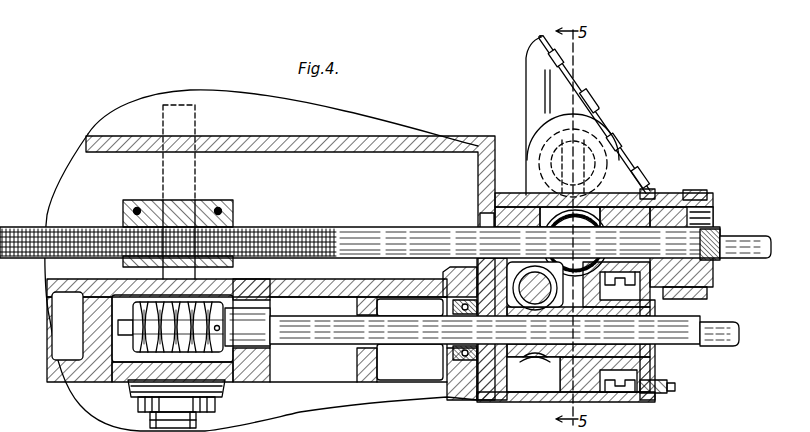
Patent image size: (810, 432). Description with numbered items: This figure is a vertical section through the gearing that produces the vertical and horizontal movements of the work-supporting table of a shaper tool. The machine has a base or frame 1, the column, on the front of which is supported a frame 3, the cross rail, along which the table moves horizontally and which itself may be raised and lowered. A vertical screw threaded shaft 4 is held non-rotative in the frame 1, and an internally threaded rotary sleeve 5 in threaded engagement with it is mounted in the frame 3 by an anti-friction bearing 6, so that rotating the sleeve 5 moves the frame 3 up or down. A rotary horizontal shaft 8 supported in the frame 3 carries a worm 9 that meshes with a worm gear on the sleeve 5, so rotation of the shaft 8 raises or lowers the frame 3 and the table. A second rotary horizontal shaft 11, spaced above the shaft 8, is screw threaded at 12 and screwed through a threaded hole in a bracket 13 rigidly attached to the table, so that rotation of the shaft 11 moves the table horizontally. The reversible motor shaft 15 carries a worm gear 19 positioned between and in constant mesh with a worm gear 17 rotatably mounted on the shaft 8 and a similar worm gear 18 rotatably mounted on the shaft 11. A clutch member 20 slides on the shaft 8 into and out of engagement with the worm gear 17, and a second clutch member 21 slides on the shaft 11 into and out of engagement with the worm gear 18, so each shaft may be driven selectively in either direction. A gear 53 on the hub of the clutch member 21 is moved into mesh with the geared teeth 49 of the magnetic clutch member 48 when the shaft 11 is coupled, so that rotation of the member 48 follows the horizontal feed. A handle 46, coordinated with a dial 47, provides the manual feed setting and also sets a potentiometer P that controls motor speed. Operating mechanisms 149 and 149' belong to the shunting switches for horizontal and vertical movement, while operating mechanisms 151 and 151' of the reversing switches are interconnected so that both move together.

The base or frame 1 is at (80, 190).
The frame 3 is at (50, 284).
The screw threaded shaft 4 is at (183, 105).
The internally threaded rotary sleeve 5 is at (207, 360).
The anti-friction bearing 6 is at (136, 398).
The rotary horizontal shaft 8 is at (323, 337).
The worm 9 is at (130, 346).
The rotary horizontal shaft 11 is at (414, 228).
The screw thread 12 is at (304, 228).
The bracket 13 is at (233, 214).
The motor shaft 15 is at (538, 357).
The worm gear 17 is at (546, 394).
The worm gear 18 is at (548, 192).
The worm gear 19 is at (557, 297).
The clutch member 20 is at (597, 394).
The second clutch member 21 is at (686, 201).
The finger piece or handle 46 is at (598, 126).
The dial 47 is at (542, 128).
The member 48 is at (594, 142).
The geared teeth 49 is at (545, 182).
The gear 53 is at (623, 147).
The operating mechanism 149 is at (565, 115).
The operating mechanism 149' is at (661, 120).
The pad 151 is at (599, 84).
The operating mechanism 151' is at (671, 169).
The potentiometer P is at (540, 122).